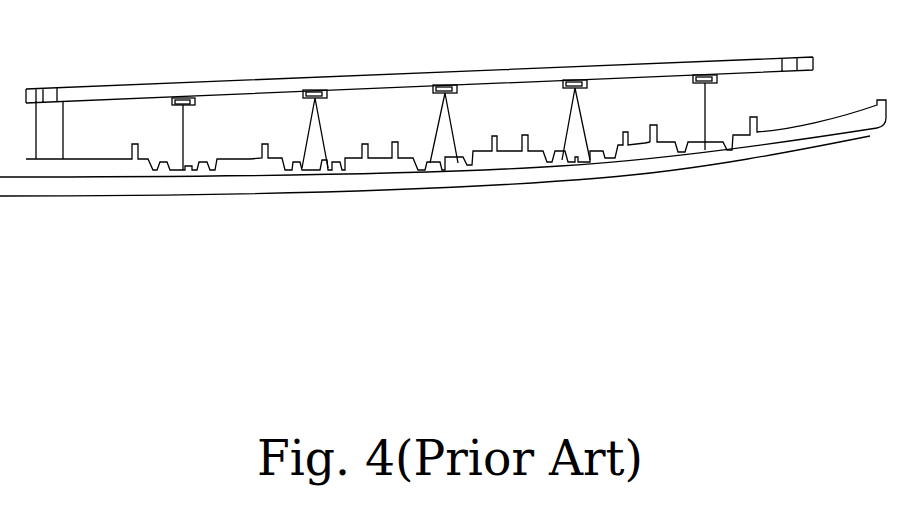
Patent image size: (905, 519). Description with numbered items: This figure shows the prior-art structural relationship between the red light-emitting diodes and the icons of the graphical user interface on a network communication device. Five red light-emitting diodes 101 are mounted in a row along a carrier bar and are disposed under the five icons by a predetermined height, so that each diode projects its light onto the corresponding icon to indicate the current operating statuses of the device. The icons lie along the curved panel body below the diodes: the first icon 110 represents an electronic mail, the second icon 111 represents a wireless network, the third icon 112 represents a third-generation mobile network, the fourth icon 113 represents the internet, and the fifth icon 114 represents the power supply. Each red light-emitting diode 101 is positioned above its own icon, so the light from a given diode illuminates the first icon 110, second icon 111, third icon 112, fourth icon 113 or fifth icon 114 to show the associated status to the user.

The red light-emitting diode 101 is at (190, 99).
The first icon 110 is at (715, 146).
The second icon 111 is at (577, 161).
The third icon 112 is at (445, 166).
The fourth icon 113 is at (315, 171).
The fifth icon 114 is at (182, 173).